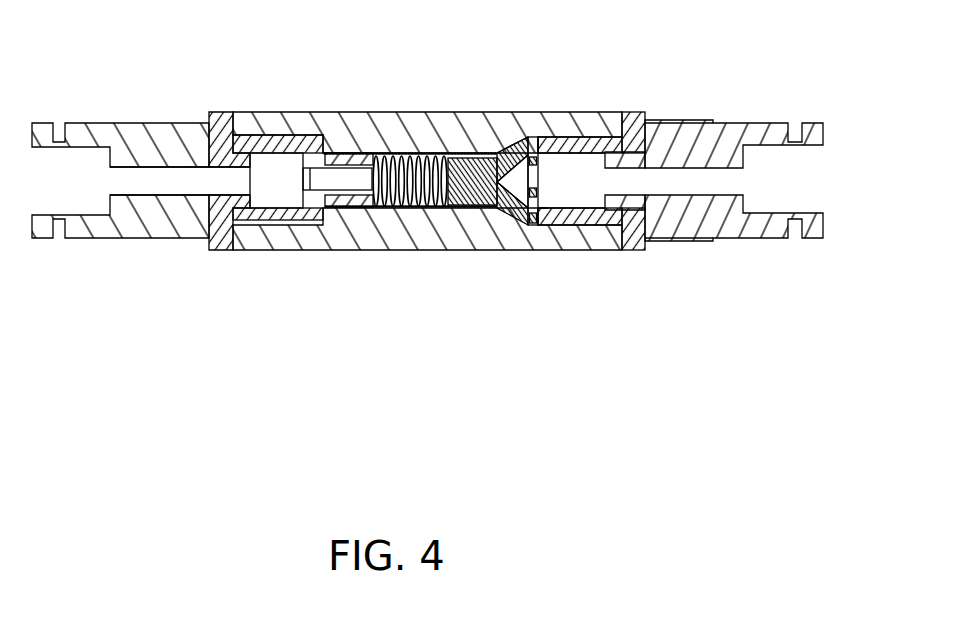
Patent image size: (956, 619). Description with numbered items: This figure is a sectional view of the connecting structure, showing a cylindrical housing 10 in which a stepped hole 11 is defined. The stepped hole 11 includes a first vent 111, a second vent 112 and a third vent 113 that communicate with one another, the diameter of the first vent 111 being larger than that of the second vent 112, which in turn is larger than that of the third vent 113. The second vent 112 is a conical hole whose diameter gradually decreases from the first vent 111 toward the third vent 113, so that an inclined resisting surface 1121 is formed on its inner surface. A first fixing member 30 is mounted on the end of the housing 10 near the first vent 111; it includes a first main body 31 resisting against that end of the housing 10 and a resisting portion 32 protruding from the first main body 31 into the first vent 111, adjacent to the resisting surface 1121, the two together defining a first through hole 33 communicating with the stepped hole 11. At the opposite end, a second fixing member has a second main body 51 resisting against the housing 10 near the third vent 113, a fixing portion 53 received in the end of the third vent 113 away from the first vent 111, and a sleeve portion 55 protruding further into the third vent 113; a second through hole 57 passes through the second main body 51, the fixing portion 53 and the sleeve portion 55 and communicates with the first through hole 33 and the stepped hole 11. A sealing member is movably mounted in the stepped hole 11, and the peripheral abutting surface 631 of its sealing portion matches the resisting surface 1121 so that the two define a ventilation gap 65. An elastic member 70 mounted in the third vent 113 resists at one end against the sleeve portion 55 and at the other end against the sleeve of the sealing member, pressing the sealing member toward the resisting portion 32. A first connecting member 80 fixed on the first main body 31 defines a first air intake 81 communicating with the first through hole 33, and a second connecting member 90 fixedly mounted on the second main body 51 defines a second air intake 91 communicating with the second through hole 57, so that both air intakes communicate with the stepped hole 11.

The housing 10 is at (355, 125).
The stepped hole 11 is at (602, 330).
The first vent 111 is at (553, 227).
The second vent 112 is at (510, 190).
The resisting surface 1121 is at (515, 143).
The third vent 113 is at (457, 200).
The first fixing member 30 is at (595, 33).
The first main body 31 is at (633, 117).
The resisting portion 32 is at (570, 140).
The first through hole 33 is at (577, 178).
The second main body 51 is at (215, 118).
The fixing portion 53 is at (253, 130).
The sleeve portion 55 is at (352, 197).
The second through hole 57 is at (278, 185).
The abutting surface 631 is at (527, 142).
The ventilation gap 65 is at (543, 206).
The elastic member 70 is at (446, 196).
The first connecting member 80 is at (740, 133).
The first air intake 81 is at (680, 183).
The second connecting member 90 is at (152, 123).
The second air intake 91 is at (157, 182).